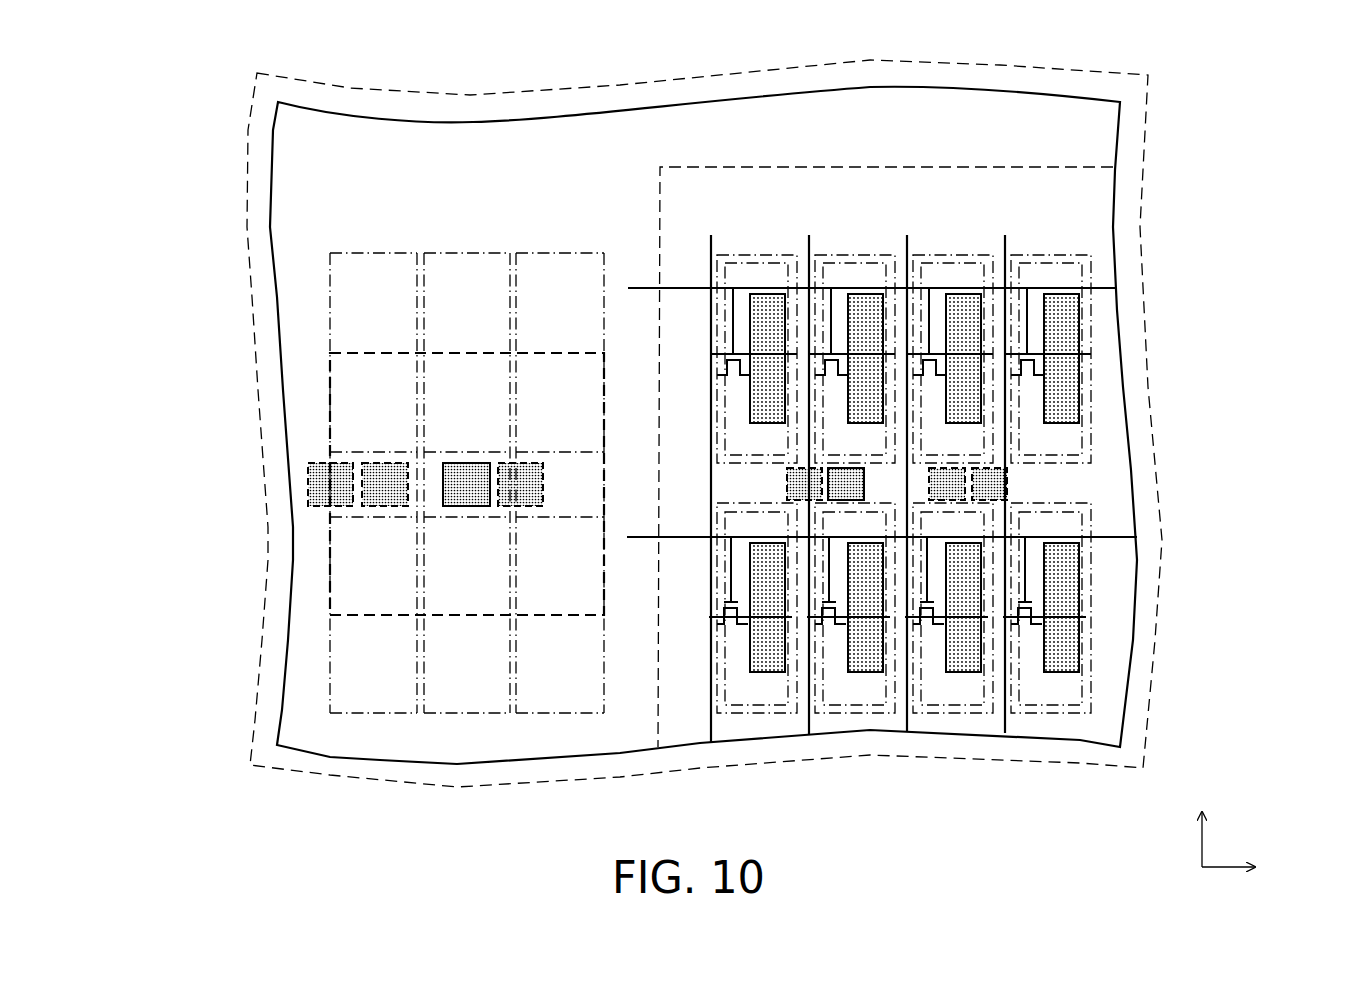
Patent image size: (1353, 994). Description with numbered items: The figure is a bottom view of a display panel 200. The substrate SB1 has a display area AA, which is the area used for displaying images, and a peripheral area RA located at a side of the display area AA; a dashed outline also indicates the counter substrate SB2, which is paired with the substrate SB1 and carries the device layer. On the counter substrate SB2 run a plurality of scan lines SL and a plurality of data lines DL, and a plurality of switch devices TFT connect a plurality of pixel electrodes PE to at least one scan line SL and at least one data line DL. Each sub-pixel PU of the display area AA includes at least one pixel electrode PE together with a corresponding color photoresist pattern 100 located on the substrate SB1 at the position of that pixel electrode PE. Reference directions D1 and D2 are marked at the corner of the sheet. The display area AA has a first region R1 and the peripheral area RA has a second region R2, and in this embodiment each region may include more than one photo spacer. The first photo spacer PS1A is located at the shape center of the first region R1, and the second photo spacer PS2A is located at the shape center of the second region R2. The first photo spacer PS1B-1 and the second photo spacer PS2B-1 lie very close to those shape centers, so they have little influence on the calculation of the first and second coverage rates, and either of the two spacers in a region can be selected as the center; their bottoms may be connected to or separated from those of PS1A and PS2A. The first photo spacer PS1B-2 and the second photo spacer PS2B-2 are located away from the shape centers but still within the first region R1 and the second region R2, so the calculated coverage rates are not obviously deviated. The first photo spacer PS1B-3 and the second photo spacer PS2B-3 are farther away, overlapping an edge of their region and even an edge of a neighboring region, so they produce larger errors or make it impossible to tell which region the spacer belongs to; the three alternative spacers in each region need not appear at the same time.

The color photoresist pattern 100 is at (1080, 680).
The second substrate (opposite substrate) 200 is at (330, 308).
The peripheral area RA is at (325, 188).
The display area AA is at (1090, 217).
The substrate SB1 is at (268, 718).
The counter substrate SB2 is at (300, 673).
The scan line SL is at (1107, 288).
The data line DL is at (709, 728).
The sub-pixel PU is at (1090, 315).
The pixel electrode PE is at (1067, 347).
The switch device TFT is at (1027, 618).
The first photo spacer PS1A is at (843, 475).
The first photo spacer PS1B-1 is at (820, 462).
The first photo spacer PS1B-2 is at (947, 487).
The first photo spacer PS1B-3 is at (1003, 485).
The second photo spacer PS2A is at (460, 493).
The second photo spacer PS2B-1 is at (503, 495).
The second photo spacer PS2B-2 is at (373, 473).
The second photo spacer PS2B-3 is at (322, 485).
The first region R1 is at (990, 570).
The second region R2 is at (330, 378).
The first direction D1 is at (1203, 818).
The second direction D2 is at (1246, 867).